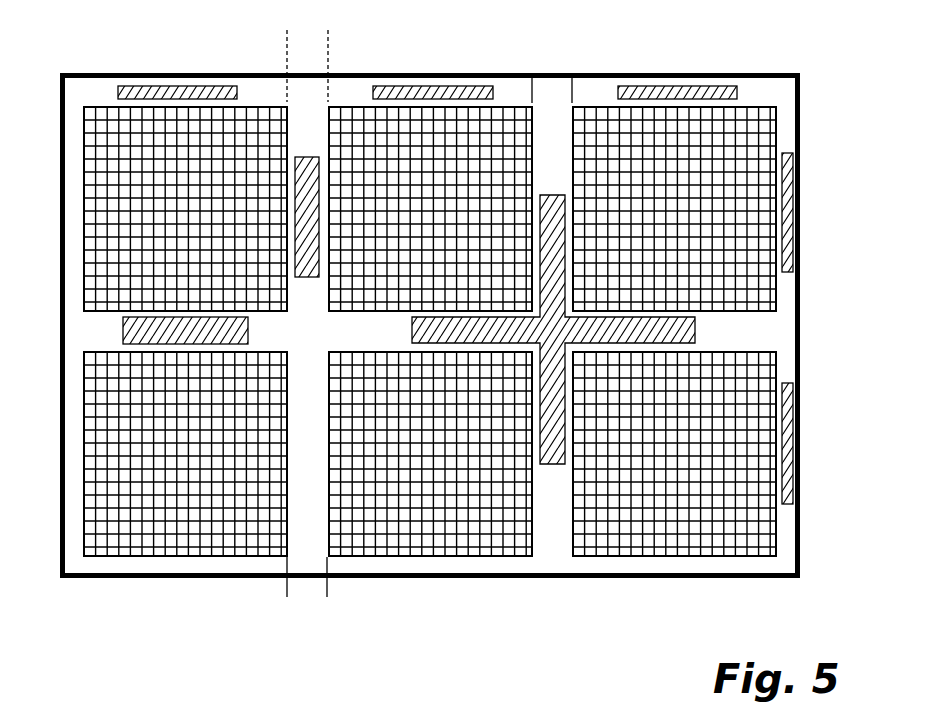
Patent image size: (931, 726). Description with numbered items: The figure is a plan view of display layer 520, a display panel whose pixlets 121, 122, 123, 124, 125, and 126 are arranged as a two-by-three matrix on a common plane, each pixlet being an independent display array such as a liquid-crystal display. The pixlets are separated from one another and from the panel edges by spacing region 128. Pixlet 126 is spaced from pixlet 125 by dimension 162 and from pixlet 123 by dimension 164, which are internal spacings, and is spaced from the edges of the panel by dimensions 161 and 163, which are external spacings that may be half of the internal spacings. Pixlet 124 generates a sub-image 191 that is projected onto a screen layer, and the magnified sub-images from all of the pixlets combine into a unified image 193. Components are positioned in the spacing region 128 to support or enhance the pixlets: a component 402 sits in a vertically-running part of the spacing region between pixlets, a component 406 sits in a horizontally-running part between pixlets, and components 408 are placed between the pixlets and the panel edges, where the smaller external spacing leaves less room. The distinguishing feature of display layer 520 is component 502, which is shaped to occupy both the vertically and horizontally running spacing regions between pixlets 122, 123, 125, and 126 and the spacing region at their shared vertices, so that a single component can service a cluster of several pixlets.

The pixlet 121 is at (185, 209).
The pixlet 122 is at (430, 209).
The pixlet 123 is at (674, 209).
The pixlet 124 is at (185, 454).
The pixlet 125 is at (430, 454).
The pixlet 126 is at (674, 454).
The spacing region 128 is at (533, 73).
The dimension 161 is at (573, 557).
The dimension 162 is at (357, 52).
The dimension 163 is at (752, 344).
The dimension 164 is at (53, 287).
The sub-image 191 is at (247, 558).
The unified image 193 is at (420, 580).
The component 402 is at (313, 157).
The component 406 is at (185, 330).
The component 408 is at (793, 222).
The component 502 is at (553, 329).
The display layer 520 is at (167, 581).